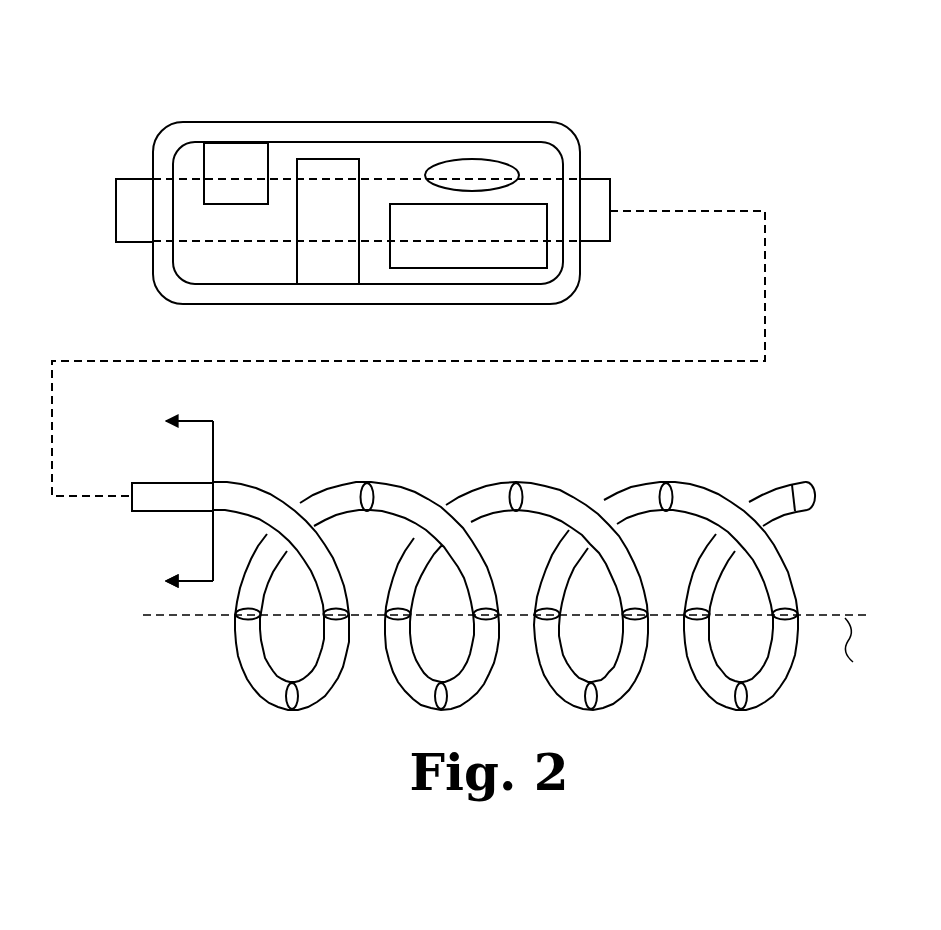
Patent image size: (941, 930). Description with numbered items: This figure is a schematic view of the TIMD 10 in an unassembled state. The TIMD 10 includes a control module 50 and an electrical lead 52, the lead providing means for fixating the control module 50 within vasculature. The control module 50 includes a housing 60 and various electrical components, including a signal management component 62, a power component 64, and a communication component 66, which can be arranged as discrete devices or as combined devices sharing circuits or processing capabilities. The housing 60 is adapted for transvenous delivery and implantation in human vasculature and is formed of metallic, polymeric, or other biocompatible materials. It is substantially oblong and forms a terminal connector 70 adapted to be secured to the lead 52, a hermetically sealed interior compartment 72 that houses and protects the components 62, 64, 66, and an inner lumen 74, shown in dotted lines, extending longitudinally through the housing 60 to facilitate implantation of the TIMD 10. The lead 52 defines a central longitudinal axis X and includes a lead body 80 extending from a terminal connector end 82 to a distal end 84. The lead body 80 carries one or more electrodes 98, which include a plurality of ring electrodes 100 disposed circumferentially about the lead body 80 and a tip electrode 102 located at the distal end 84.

The TIMD 10 is at (814, 141).
The control module 50 is at (375, 188).
The electrical lead 52 is at (487, 572).
The housing 60 is at (297, 119).
The signal management component 62 is at (491, 273).
The power component 64 is at (364, 270).
The communication component 66 is at (451, 156).
The terminal connector 70 is at (615, 178).
The hermetically sealed interior compartment 72 is at (546, 156).
The inner lumen 74 is at (199, 247).
The lead body 80 is at (484, 480).
The terminal connector end 82 is at (128, 483).
The distal end 84 is at (822, 489).
The electrodes 98 is at (668, 480).
The ring electrodes 100 is at (368, 482).
The tip electrode 102 is at (818, 505).